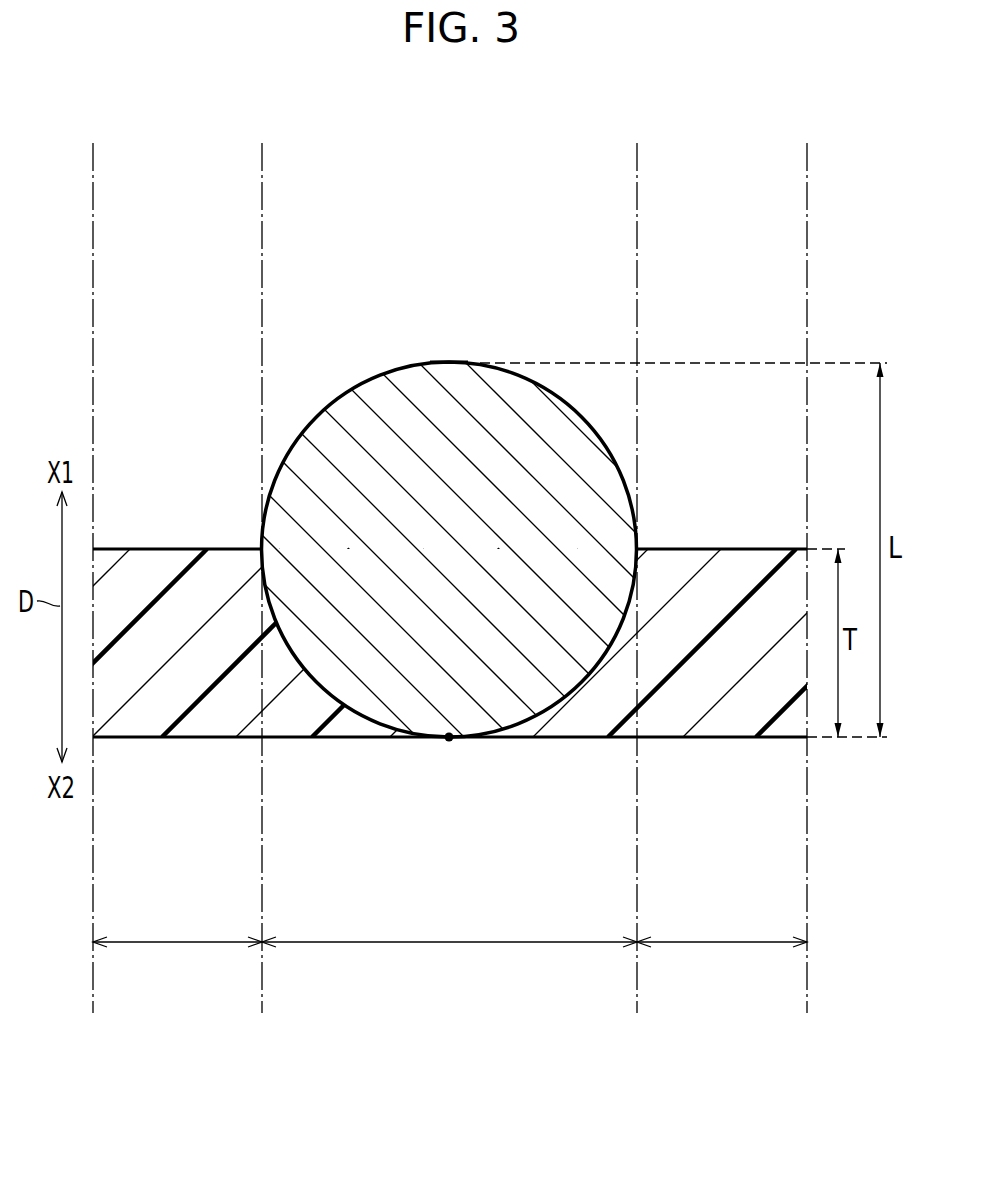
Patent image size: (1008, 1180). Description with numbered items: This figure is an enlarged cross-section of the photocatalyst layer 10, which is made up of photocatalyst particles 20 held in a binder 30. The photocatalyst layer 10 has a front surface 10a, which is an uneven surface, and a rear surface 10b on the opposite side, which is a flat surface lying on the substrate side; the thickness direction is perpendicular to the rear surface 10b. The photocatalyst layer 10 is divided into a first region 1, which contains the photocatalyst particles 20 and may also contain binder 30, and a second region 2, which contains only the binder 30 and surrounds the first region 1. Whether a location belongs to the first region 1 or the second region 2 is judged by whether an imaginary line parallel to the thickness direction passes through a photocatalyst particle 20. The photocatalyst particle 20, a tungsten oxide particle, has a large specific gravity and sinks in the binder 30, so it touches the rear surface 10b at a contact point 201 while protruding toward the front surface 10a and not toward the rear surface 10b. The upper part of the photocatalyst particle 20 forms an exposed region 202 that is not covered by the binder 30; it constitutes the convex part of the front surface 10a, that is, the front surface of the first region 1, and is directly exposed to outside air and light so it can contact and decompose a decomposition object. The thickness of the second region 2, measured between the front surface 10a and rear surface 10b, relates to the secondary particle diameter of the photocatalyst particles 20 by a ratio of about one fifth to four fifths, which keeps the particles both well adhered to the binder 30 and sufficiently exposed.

The first region 1 is at (458, 944).
The second region 2 is at (183, 944).
The photocatalyst layer 10 is at (528, 222).
The front surface 10a is at (330, 408).
The rear surface 10b is at (147, 739).
The photocatalyst particle 20 is at (495, 667).
The contact point 201 is at (449, 742).
The exposed region 202 is at (415, 361).
The binder 30 is at (190, 705).